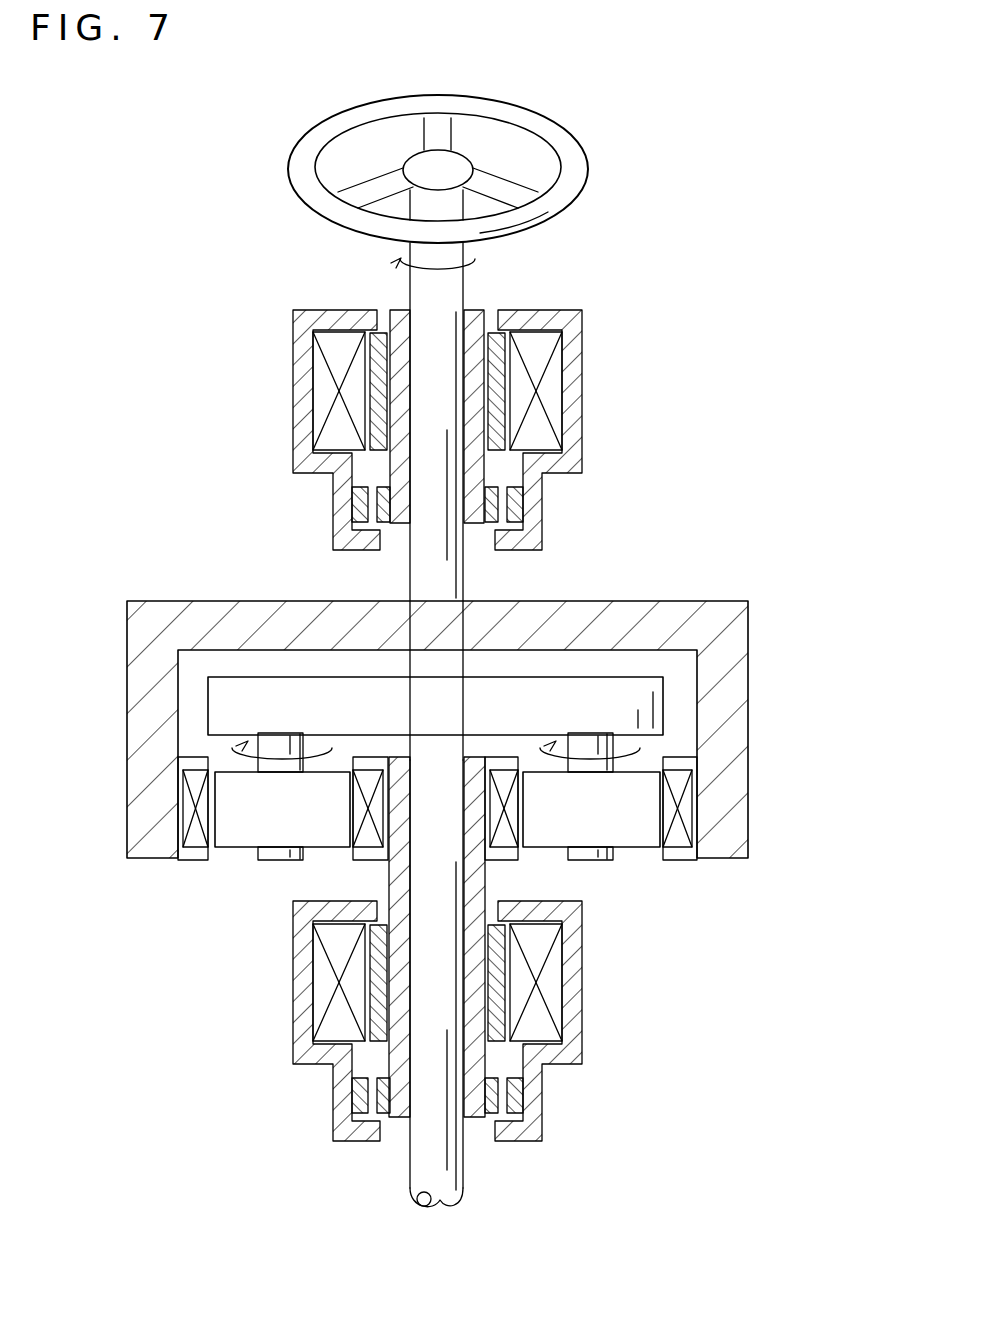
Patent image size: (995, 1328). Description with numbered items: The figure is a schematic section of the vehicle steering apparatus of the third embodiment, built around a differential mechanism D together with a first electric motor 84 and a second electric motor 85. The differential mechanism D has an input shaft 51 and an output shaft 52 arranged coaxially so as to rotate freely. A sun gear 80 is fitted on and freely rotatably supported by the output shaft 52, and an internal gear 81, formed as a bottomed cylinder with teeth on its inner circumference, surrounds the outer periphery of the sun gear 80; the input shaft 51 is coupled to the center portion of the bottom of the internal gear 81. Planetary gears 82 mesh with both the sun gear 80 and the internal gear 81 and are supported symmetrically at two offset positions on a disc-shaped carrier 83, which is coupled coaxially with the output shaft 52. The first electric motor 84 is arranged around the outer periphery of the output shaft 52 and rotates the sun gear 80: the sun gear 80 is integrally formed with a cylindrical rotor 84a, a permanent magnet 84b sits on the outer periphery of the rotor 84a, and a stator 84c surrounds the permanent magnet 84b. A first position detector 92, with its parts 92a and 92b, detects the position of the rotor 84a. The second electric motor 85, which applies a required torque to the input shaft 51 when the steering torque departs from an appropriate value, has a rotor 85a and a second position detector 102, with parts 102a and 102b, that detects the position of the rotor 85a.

The input shaft 51 is at (467, 293).
The output shaft 52 is at (462, 1172).
The second electric motor 85 is at (585, 319).
The rotor 85a is at (477, 372).
The second position detector 102 is at (331, 518).
The inner bearing race 102a is at (393, 538).
The outer bearing race 102b is at (355, 497).
The differential mechanism D is at (495, 735).
The internal gear 81 is at (740, 736).
The carrier 83 is at (262, 683).
The sun gear 80 is at (355, 855).
The planetary gears 82 is at (228, 848).
The first electric motor 84 is at (585, 1058).
The rotor 84a is at (480, 942).
The permanent magnet 84b is at (497, 978).
The stator 84c is at (553, 1007).
The first position detector 92 is at (359, 1148).
The inner bearing race 92a is at (372, 1105).
The outer bearing race 92b is at (368, 1098).